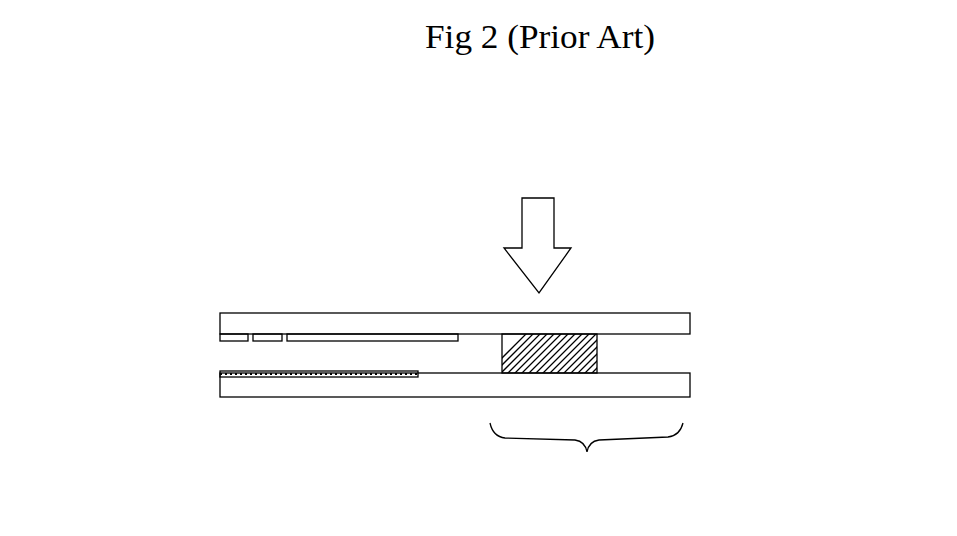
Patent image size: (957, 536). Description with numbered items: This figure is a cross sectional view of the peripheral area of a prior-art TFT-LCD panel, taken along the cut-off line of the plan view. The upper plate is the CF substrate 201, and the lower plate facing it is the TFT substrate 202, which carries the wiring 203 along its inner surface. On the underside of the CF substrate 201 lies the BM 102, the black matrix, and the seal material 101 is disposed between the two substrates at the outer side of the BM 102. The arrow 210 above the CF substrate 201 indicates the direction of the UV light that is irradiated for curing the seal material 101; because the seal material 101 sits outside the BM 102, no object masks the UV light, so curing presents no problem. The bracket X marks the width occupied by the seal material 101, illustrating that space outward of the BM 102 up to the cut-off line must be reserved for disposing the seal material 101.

The seal material 101 is at (507, 335).
The BM 102 is at (405, 345).
The CF substrate 201 is at (668, 313).
The TFT substrate 202 is at (690, 380).
The wiring 203 is at (242, 373).
The arrow 210 is at (538, 198).
The sealant region width X is at (586, 461).